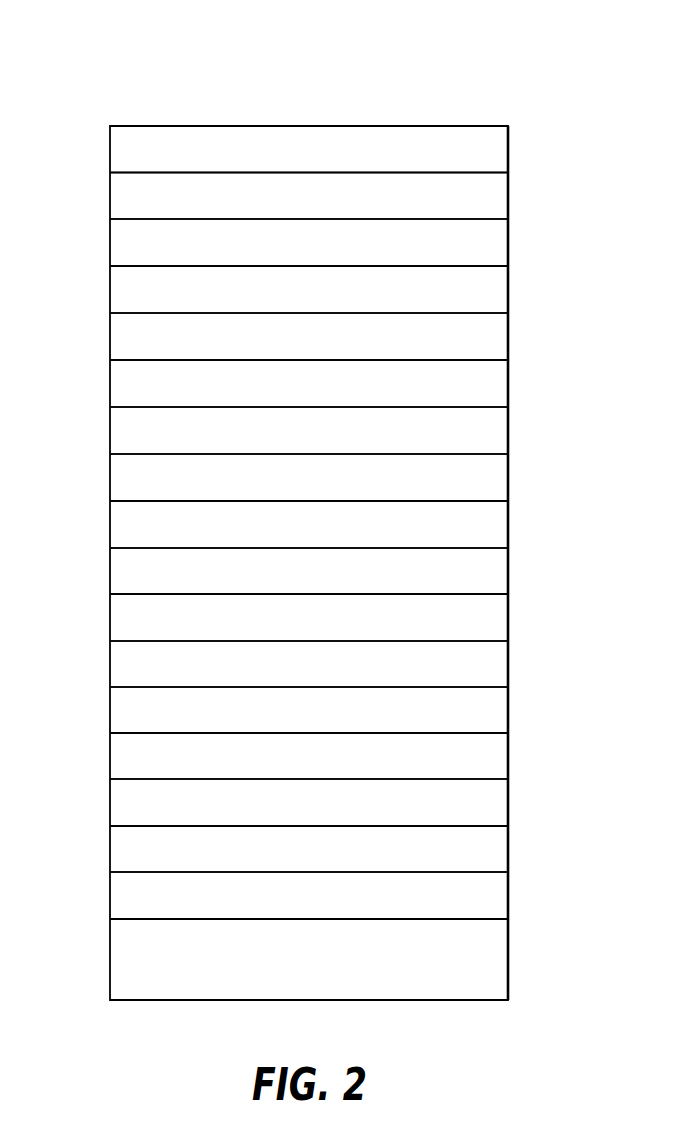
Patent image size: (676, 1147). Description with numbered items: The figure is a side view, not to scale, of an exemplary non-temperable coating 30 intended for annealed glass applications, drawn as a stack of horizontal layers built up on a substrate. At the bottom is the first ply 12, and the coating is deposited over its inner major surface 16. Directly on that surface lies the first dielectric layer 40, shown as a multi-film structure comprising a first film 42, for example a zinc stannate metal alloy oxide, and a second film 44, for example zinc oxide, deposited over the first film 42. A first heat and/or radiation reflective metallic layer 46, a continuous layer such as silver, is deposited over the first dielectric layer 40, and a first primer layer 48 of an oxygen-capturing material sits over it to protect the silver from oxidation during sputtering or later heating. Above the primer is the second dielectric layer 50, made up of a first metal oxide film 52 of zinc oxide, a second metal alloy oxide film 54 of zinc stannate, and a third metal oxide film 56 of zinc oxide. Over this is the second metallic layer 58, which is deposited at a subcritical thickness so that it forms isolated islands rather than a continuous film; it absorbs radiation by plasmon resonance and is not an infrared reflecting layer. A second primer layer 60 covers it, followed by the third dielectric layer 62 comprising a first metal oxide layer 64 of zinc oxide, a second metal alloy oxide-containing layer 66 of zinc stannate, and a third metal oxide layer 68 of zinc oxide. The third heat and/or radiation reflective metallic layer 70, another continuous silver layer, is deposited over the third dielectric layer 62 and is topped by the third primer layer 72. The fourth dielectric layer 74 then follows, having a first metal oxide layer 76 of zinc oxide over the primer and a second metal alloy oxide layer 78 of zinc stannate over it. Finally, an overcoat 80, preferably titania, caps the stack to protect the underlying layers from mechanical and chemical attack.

The non-temperable coating 30 is at (533, 74).
The first ply 12 is at (135, 957).
The No. 2 surface 16 is at (133, 918).
The first dielectric layer 40 is at (522, 826).
The first film 42 is at (120, 893).
The second film 44 is at (122, 851).
The first heat and/or radiation reflective metallic layer 46 is at (122, 804).
The first primer layer 48 is at (122, 758).
The second dielectric layer 50 is at (522, 594).
The first metal oxide film 52 is at (122, 712).
The second metal alloy oxide film 54 is at (122, 666).
The third metal oxide film 56 is at (122, 620).
The second metallic layer 58 is at (122, 573).
The second primer layer 60 is at (122, 526).
The third dielectric layer 62 is at (522, 361).
The first metal oxide layer 64 is at (122, 480).
The second metal alloy oxide-containing layer 66 is at (122, 432).
The third metal oxide layer 68 is at (122, 386).
The third heat and/or radiation reflective metallic layer 70 is at (122, 338).
The third primer layer 72 is at (122, 292).
The fourth dielectric layer 74 is at (522, 173).
The first metal oxide layer 76 is at (122, 244).
The second metal alloy oxide layer 78 is at (122, 198).
The overcoat 80 is at (122, 151).